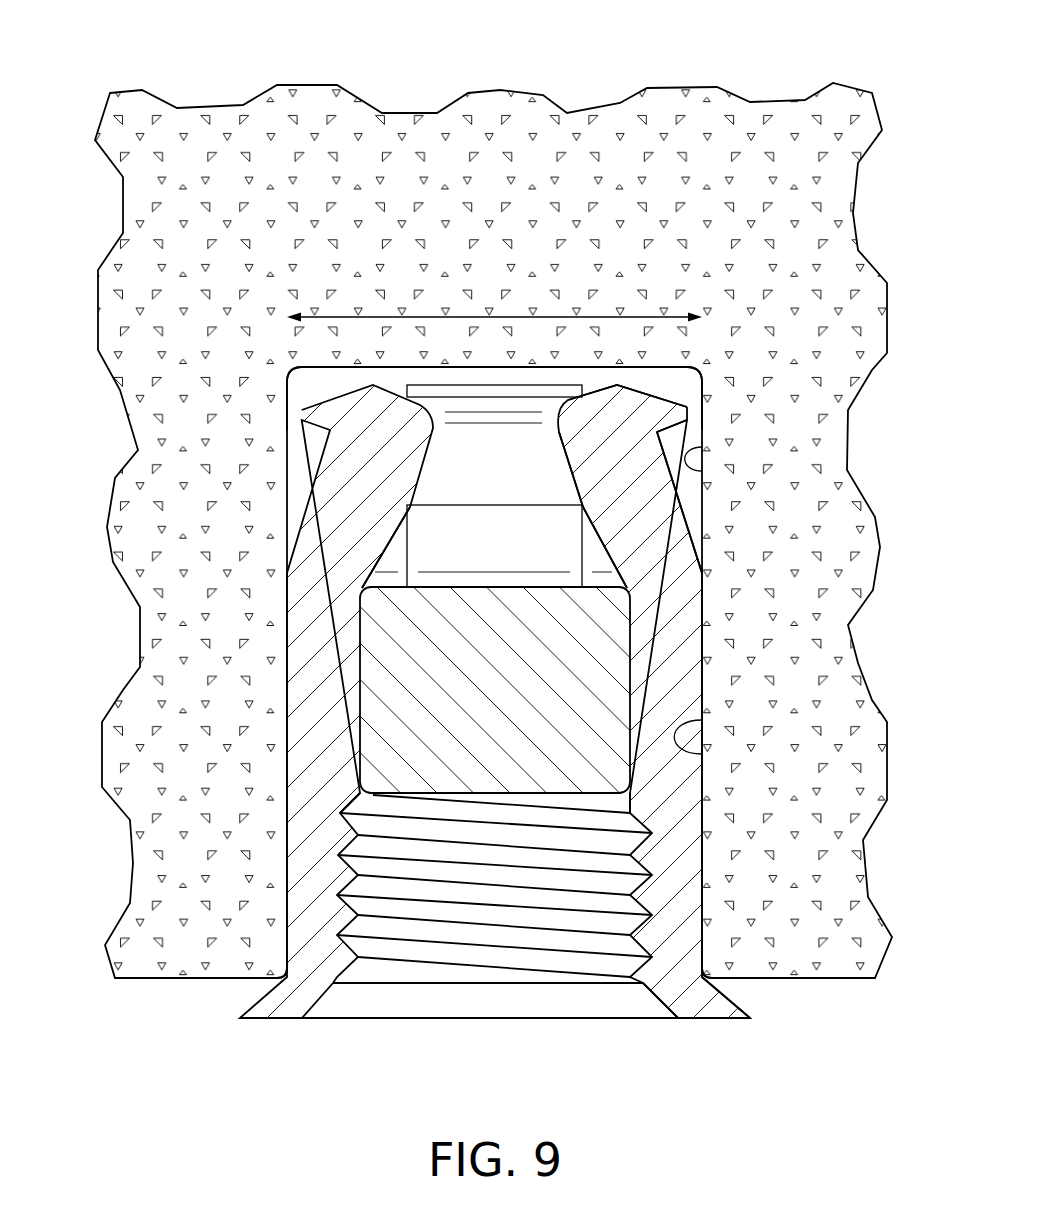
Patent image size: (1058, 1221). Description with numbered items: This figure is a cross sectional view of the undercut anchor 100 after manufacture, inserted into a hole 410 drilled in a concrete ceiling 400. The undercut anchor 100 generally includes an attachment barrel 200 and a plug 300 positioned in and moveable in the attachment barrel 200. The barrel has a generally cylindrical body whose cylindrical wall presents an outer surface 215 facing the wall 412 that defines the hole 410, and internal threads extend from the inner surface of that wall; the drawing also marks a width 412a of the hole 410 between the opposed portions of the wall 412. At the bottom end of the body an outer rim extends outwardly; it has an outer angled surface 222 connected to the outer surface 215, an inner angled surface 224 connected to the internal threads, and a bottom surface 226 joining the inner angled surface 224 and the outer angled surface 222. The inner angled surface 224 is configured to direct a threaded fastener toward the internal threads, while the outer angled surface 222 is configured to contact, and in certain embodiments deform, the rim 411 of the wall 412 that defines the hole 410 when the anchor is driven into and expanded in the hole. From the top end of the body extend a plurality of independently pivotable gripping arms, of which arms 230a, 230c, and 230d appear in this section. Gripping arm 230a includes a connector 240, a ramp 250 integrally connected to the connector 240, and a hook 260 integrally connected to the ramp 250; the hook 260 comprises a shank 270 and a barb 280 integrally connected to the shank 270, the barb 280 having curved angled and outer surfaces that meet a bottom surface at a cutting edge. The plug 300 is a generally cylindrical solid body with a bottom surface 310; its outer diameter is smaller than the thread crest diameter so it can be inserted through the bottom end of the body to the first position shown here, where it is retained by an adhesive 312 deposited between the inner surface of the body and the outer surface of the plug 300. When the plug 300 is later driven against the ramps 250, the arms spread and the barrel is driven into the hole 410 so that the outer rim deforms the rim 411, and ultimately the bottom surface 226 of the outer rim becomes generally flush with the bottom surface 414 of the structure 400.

The undercut anchor 100 is at (315, 386).
The attachment barrel 200 is at (300, 683).
The outer surface 215 is at (702, 754).
The outer angled surface 222 is at (737, 1003).
The inner angled surface 224 is at (663, 1000).
The bottom surface 226 is at (715, 1018).
The pivotable gripping arm 230a is at (672, 500).
The pivotable gripping arm 230c is at (310, 495).
The pivotable gripping arm 230d is at (485, 396).
The connector 240 is at (675, 585).
The ramp 250 is at (658, 532).
The hook 260 is at (604, 370).
The shank 270 is at (586, 438).
The barb 280 is at (688, 412).
The plug 300 is at (560, 687).
The bottom surface 310 is at (515, 795).
The adhesive 312 is at (292, 792).
The concrete ceiling 400 is at (310, 130).
The hole 410 is at (537, 362).
The rim 411 is at (705, 972).
The wall 412 is at (707, 450).
The cavity width 412a is at (613, 317).
The bottom surface 414 is at (183, 978).